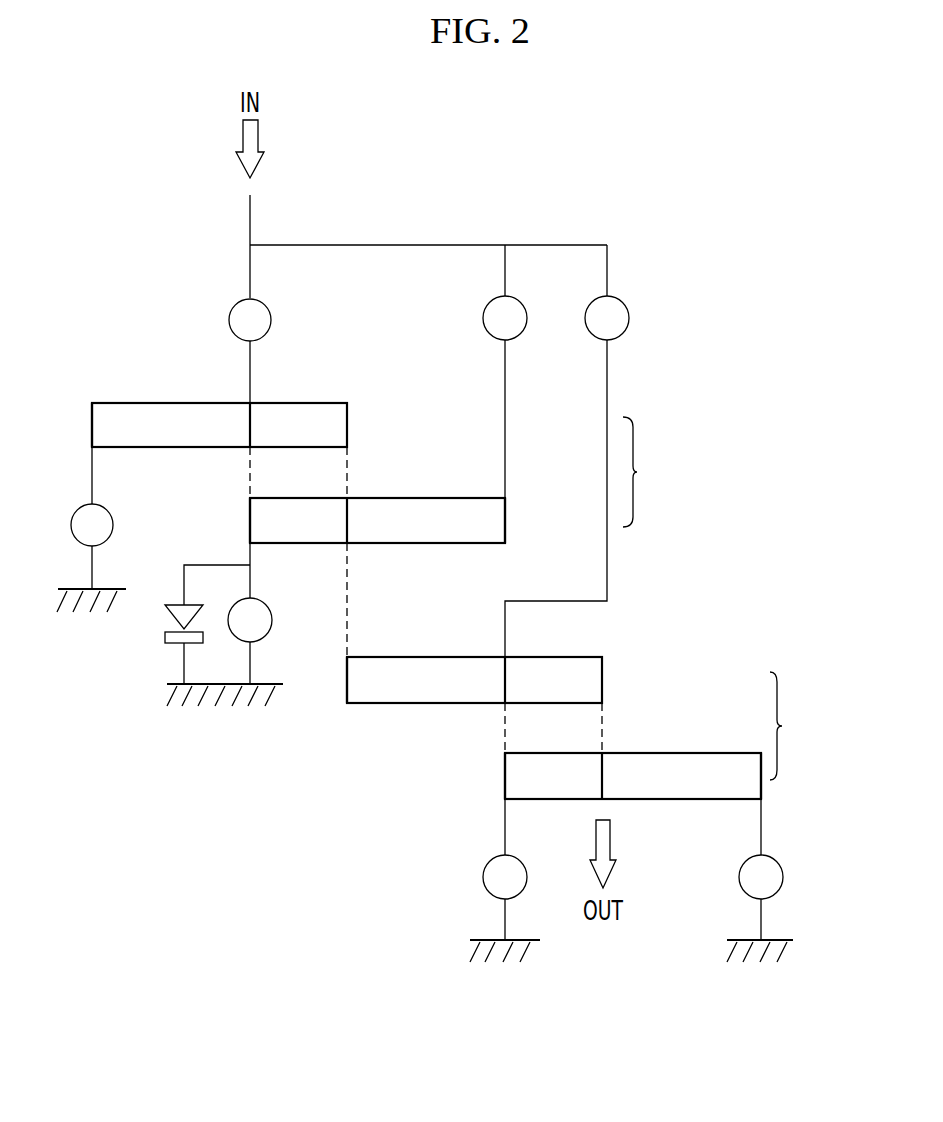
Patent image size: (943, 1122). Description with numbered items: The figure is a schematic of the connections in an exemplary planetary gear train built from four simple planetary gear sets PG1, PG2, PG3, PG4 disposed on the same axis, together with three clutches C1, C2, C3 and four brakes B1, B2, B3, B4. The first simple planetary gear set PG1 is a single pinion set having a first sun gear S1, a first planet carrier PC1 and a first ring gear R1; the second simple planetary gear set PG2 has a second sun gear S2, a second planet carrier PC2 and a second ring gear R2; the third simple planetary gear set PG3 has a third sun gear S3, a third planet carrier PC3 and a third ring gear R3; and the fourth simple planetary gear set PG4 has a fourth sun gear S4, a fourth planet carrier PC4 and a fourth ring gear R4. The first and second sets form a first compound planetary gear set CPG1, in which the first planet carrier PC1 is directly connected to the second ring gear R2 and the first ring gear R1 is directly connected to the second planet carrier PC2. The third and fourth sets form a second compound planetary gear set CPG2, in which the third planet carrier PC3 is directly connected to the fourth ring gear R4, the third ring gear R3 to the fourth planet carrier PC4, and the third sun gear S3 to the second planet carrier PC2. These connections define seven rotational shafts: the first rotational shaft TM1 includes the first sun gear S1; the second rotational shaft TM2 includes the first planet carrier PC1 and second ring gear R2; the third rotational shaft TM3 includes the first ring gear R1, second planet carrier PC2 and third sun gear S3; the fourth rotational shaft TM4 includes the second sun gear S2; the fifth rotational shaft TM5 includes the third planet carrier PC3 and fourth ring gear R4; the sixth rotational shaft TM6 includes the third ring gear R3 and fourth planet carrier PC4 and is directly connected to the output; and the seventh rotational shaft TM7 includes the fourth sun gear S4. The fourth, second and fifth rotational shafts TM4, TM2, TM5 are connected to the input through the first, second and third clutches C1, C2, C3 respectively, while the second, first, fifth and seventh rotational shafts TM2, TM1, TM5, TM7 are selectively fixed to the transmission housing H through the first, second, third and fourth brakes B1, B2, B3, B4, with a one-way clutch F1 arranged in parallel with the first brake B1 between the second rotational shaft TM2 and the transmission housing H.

The first clutch C1 is at (505, 318).
The second clutch C2 is at (250, 320).
The third clutch C3 is at (607, 318).
The first brake B1 is at (250, 641).
The second brake B2 is at (92, 546).
The third brake B3 is at (505, 897).
The fourth brake B4 is at (761, 897).
The one-way clutch F1 is at (169, 644).
The first simple planetary gear set PG1 is at (362, 414).
The second simple planetary gear set PG2 is at (515, 512).
The third simple planetary gear set PG3 is at (337, 710).
The fourth simple planetary gear set PG4 is at (485, 806).
The first sun gear S1 is at (92, 425).
The second sun gear S2 is at (505, 521).
The third sun gear S3 is at (347, 680).
The fourth sun gear S4 is at (761, 777).
The first planet carrier PC1 is at (250, 425).
The second planet carrier PC2 is at (347, 523).
The third planet carrier PC3 is at (505, 680).
The fourth planet carrier PC4 is at (602, 777).
The first ring gear R1 is at (347, 425).
The second ring gear R2 is at (250, 523).
The third ring gear R3 is at (602, 680).
The fourth ring gear R4 is at (505, 777).
The first rotational shaft TM1 is at (94, 472).
The second rotational shaft TM2 is at (250, 372).
The third rotational shaft TM3 is at (349, 600).
The fourth rotational shaft TM4 is at (505, 420).
The fifth rotational shaft TM5 is at (505, 630).
The sixth rotational shaft TM6 is at (604, 728).
The seventh rotational shaft TM7 is at (761, 825).
The first compound planetary gear set CPG1 is at (657, 472).
The second compound planetary gear set CPG2 is at (804, 726).
The transmission housing H is at (92, 602).